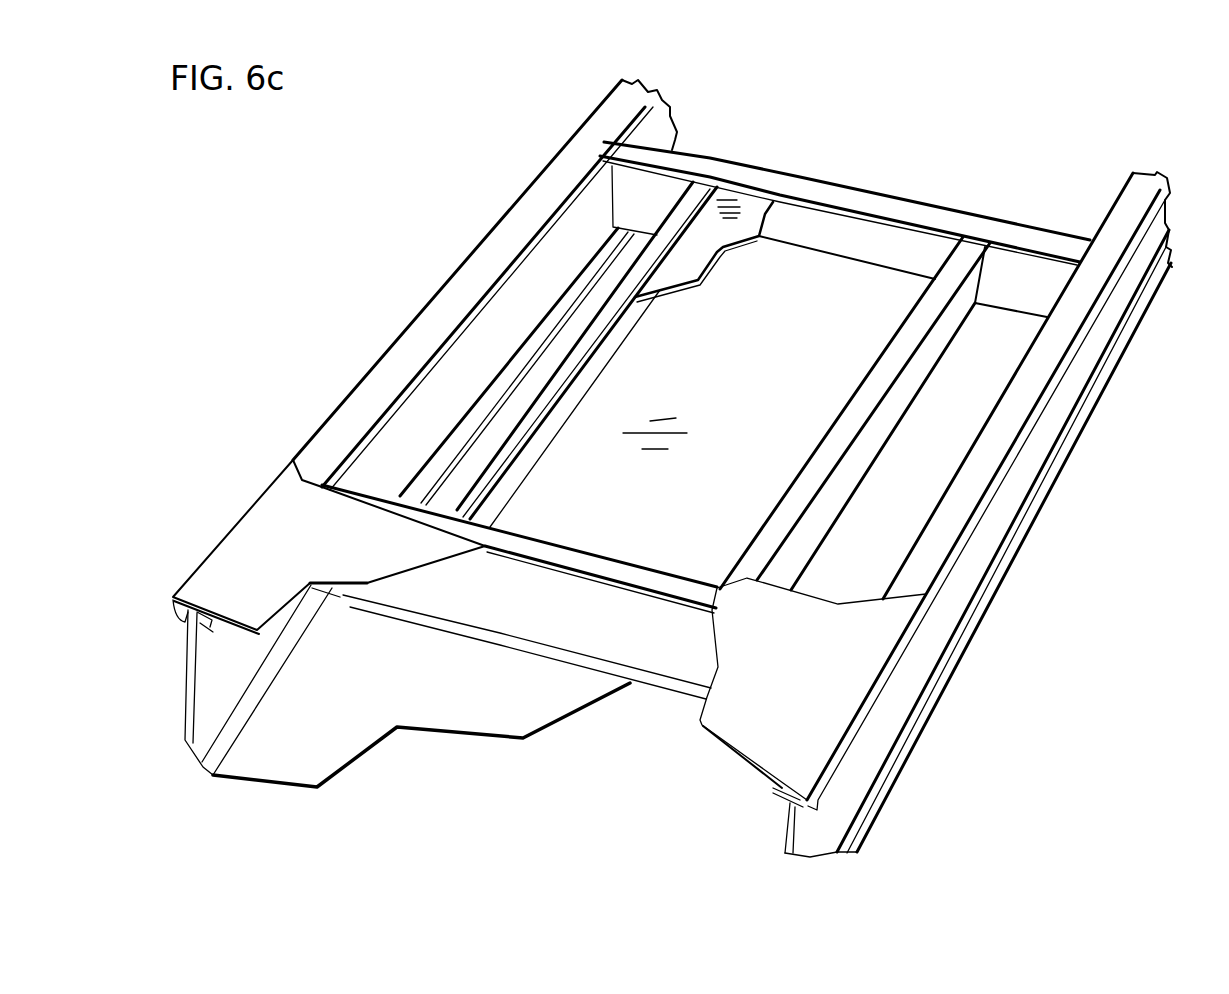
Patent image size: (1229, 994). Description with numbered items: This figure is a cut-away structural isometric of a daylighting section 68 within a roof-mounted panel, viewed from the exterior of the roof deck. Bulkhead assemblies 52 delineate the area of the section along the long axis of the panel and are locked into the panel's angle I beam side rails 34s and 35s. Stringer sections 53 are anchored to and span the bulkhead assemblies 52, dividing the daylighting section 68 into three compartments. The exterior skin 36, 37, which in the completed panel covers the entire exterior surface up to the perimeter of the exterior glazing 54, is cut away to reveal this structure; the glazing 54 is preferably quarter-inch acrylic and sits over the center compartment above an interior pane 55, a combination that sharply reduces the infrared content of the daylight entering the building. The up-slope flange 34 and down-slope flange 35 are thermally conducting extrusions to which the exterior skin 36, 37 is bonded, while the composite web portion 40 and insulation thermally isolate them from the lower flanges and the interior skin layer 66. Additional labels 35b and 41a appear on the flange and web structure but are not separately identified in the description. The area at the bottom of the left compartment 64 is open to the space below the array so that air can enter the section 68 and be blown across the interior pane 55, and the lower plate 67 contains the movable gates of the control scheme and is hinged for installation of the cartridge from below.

The up-slope flange 34 is at (1117, 212).
The angle I beam side rail 34s is at (883, 768).
The down-slope flange 35 is at (567, 177).
The side rail wall 35b is at (372, 442).
The angle I beam side rail 35s is at (233, 708).
The exterior skin layer 36 is at (753, 603).
The exterior skin layer 37 is at (280, 510).
The composite web portion 40 is at (1122, 310).
The rail channel surface 41a is at (433, 407).
The bulkhead assembly 52 is at (830, 200).
The stringer section 53 is at (693, 200).
The exterior glazing 54 is at (747, 210).
The interior pane 55 is at (655, 425).
The open area at bottom of left compartment 64 is at (631, 235).
The interior skin layer 66 is at (490, 720).
The lower plate 67 is at (907, 497).
The daylighting section 68 is at (1120, 84).